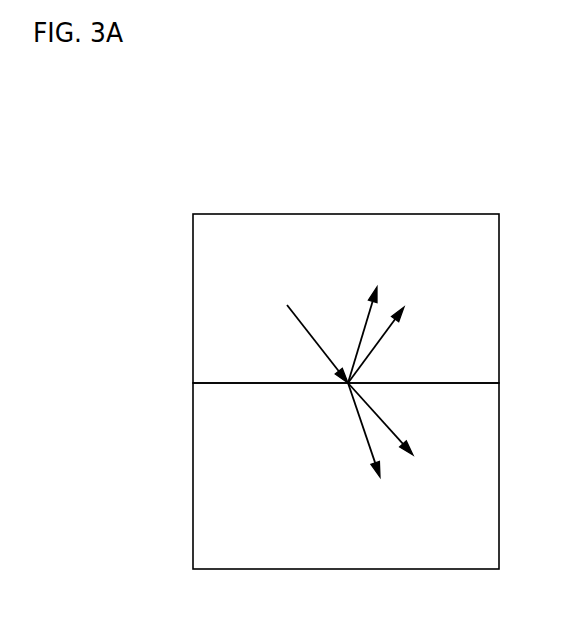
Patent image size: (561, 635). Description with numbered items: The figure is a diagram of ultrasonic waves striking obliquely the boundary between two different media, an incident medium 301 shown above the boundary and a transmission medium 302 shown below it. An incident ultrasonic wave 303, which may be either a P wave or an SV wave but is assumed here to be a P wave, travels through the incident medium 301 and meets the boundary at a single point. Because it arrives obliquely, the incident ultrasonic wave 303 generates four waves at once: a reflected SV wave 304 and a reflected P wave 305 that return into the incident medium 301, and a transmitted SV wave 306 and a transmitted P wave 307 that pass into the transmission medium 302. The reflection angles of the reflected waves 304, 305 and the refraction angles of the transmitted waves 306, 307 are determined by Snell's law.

The incident medium 301 is at (196, 270).
The transmission medium 302 is at (196, 496).
The incident ultrasonic wave 303 is at (317, 344).
The reflected SV wave 304 is at (363, 330).
The reflected P wave 305 is at (379, 342).
The transmitted SV wave 306 is at (368, 440).
The transmitted P wave 307 is at (383, 422).